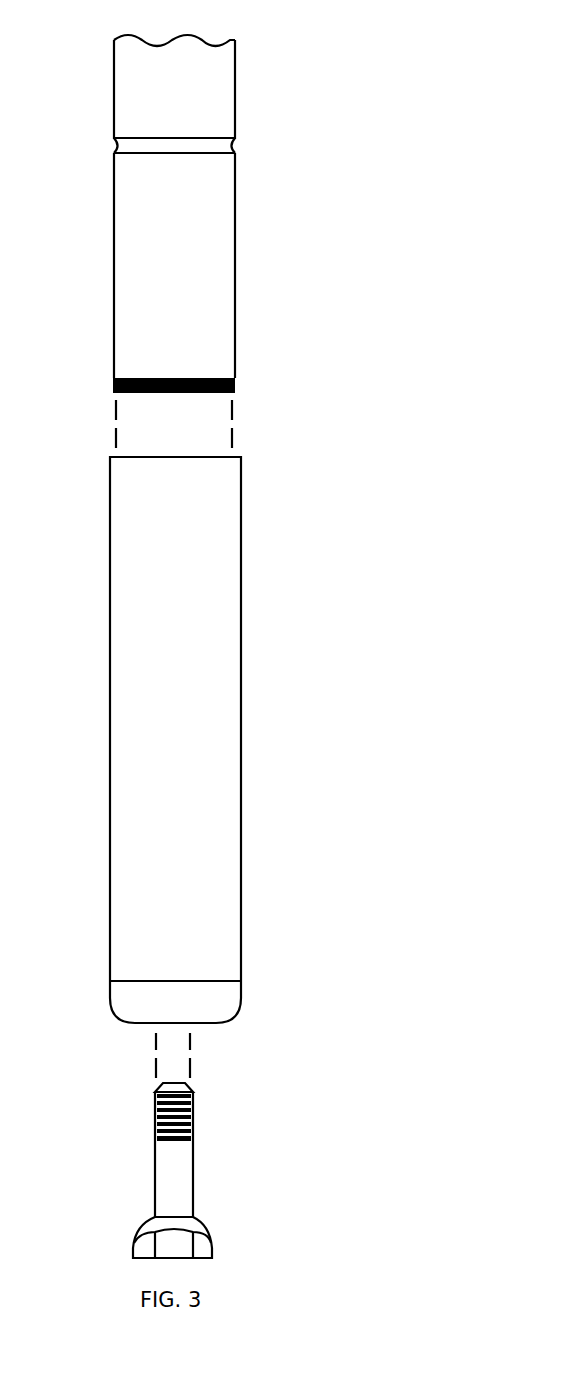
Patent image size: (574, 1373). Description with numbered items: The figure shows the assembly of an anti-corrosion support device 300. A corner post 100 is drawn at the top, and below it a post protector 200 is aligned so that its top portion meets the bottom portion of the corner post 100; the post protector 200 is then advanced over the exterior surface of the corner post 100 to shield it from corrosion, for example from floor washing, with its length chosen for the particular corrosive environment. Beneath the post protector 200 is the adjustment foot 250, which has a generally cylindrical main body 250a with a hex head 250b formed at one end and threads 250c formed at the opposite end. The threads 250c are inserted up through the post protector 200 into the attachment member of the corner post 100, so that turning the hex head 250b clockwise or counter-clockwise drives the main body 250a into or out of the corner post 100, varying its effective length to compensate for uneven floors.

The anti-corrosion support device 300 is at (345, 33).
The corner post 100 is at (249, 215).
The post protector 200 is at (259, 668).
The adjustment foot 250 is at (204, 1180).
The main body 250a is at (170, 1179).
The hex head 250b is at (183, 1250).
The threads 250c is at (194, 1120).